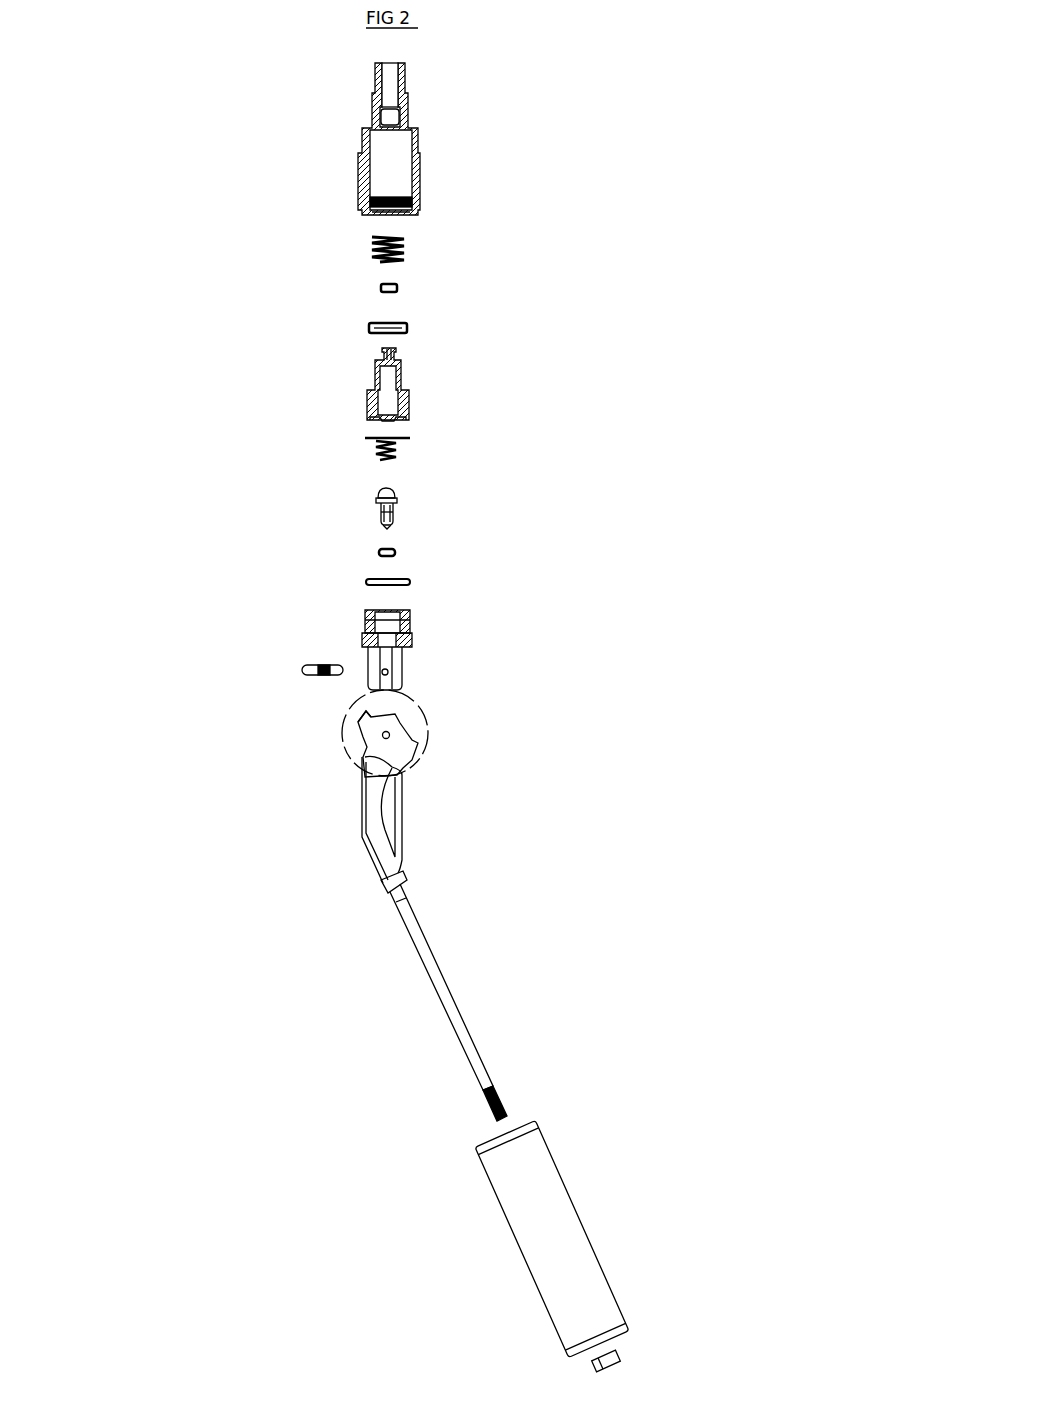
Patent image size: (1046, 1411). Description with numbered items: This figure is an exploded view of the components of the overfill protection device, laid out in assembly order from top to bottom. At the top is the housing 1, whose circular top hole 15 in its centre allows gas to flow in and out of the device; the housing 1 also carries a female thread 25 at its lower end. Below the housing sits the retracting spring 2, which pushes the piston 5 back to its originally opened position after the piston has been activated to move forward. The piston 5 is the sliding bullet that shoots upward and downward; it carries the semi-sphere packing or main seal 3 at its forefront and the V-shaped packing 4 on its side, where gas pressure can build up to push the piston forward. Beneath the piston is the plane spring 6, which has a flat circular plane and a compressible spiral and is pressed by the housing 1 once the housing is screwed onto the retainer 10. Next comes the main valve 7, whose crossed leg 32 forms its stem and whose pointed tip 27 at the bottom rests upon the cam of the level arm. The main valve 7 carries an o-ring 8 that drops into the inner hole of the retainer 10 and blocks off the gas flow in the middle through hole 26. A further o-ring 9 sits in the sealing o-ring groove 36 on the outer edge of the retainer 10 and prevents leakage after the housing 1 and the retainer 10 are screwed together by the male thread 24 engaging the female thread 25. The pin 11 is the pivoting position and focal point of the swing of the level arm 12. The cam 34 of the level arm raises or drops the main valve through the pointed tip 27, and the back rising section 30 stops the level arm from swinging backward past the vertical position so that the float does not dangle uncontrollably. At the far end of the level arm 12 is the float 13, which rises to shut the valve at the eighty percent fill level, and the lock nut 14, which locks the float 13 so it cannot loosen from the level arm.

The top hole 15 is at (388, 84).
The housing 1 is at (421, 147).
The female thread 25 is at (367, 213).
The retracting spring 2 is at (406, 247).
The semi-sphere packing or main seal 3 is at (399, 288).
The V-shaped packing 4 is at (409, 327).
The piston 5 is at (410, 397).
The plane spring 6 is at (406, 449).
The main valve 7 is at (398, 502).
The crossed leg 32 is at (381, 516).
The pointed tip 27 is at (385, 527).
The o-ring 8 is at (398, 551).
The o-ring 9 is at (412, 581).
The retainer 10 is at (384, 645).
The sealing o-ring groove 36 is at (367, 620).
The male thread 24 is at (414, 641).
The middle through hole 26 is at (385, 645).
The pin 11 is at (299, 669).
The back rising section 30 is at (274, 714).
The cam 34 is at (355, 733).
The level arm 12 is at (409, 873).
The float 13 is at (492, 1197).
The lock nut 14 is at (590, 1366).